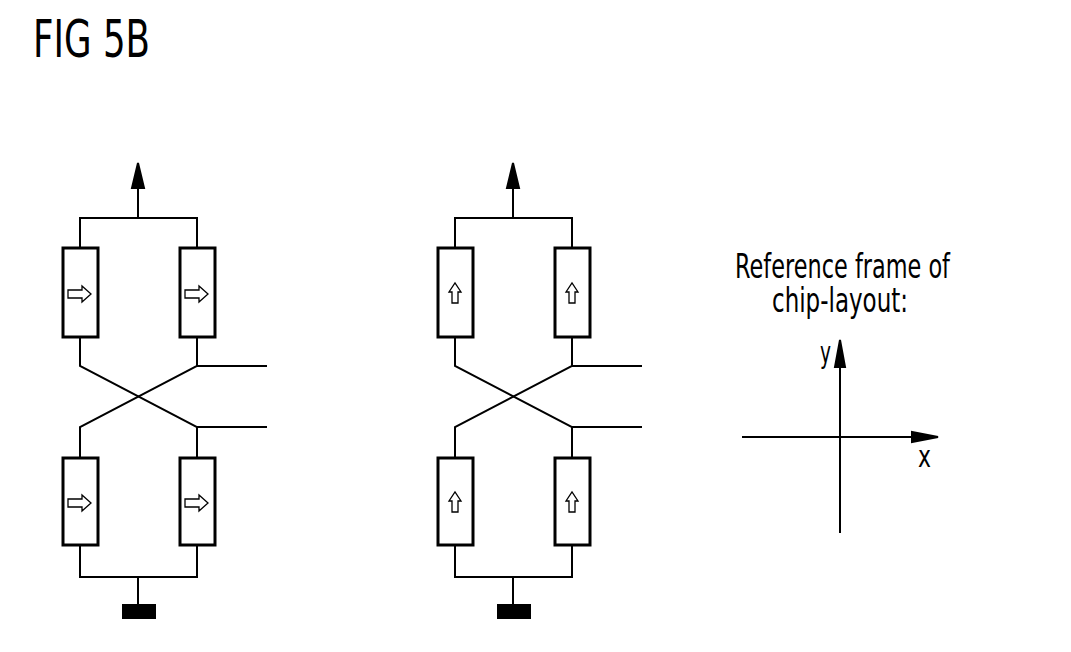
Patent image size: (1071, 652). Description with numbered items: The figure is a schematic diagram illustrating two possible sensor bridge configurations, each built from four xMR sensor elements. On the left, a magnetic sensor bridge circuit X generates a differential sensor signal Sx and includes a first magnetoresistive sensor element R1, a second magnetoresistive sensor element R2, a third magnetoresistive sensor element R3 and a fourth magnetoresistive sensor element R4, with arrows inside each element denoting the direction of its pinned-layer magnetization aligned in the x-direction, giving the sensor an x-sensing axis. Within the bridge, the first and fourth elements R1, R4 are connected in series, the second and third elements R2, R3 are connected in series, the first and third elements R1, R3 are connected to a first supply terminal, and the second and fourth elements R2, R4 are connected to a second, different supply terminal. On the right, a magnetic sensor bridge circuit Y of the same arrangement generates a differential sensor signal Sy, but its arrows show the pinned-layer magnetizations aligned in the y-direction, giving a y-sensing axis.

The magnetic sensor bridge circuit X is at (91, 172).
The magnetic sensor bridge circuit Y is at (466, 172).
The first magnetoresistive sensor element R1 is at (251, 292).
The second magnetoresistive sensor element R2 is at (251, 501).
The third magnetoresistive sensor element R3 is at (402, 292).
The fourth magnetoresistive sensor element R4 is at (403, 501).
The differential sensor signal Sx is at (278, 368).
The differential sensor signal Sy is at (653, 368).